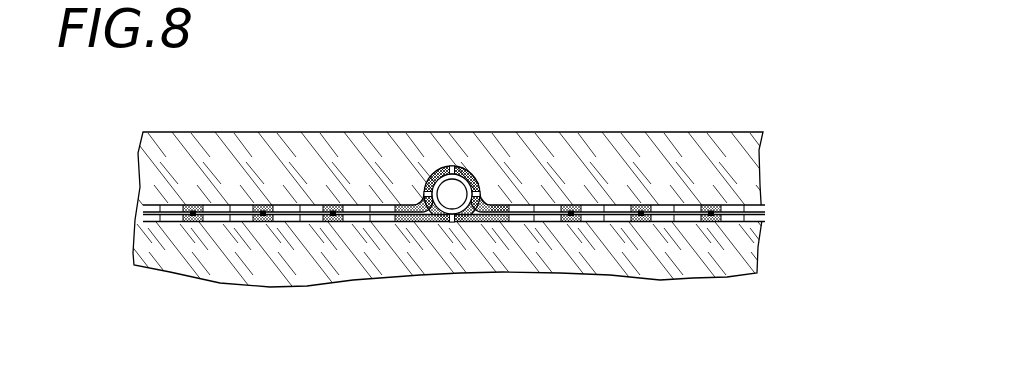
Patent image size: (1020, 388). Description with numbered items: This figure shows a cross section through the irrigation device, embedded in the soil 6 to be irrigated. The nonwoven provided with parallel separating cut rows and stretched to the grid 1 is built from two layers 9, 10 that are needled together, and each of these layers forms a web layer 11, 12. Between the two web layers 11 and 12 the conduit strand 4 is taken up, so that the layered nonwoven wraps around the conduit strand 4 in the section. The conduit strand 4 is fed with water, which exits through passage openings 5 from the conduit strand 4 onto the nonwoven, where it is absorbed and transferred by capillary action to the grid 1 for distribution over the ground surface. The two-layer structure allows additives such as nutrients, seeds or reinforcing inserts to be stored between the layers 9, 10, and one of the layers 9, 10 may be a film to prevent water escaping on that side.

The grid 1 is at (517, 193).
The conduit strand 4 is at (456, 186).
The passage openings 5 is at (430, 180).
The soil 6 is at (342, 255).
The layer 9 is at (765, 205).
The layer 10 is at (765, 218).
The web layer 11 is at (486, 221).
The web layer 12 is at (502, 210).